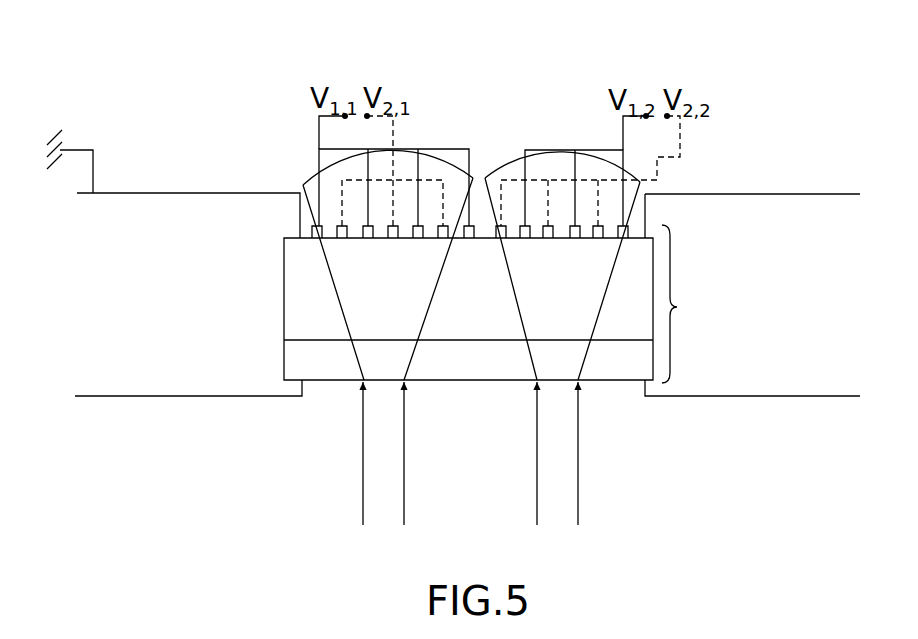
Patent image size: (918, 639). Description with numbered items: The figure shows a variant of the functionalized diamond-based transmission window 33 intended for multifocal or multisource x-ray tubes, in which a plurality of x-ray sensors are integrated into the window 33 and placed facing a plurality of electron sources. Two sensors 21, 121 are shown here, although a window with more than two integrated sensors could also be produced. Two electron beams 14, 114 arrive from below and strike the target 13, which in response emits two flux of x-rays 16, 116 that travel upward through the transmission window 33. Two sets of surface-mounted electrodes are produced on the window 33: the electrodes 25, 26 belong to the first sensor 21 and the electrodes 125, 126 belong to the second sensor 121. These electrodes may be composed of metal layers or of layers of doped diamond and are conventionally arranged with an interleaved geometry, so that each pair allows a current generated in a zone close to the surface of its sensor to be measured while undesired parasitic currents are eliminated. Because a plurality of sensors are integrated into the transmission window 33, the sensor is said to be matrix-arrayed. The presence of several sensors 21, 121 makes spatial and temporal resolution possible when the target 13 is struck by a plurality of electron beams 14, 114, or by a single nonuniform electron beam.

The x-ray sensor 21 is at (302, 123).
The electrode 25 is at (340, 226).
The electrode 26 is at (312, 230).
The x-ray flux 16 is at (451, 166).
The electrode 125 is at (597, 226).
The electrode 126 is at (621, 226).
The x-ray sensor 121 is at (665, 171).
The x-ray flux 116 is at (660, 193).
The functionalized diamond-based transmission window 33 is at (499, 304).
The target 13 is at (464, 387).
The electron beam 14 is at (404, 493).
The electron beam 114 is at (578, 488).